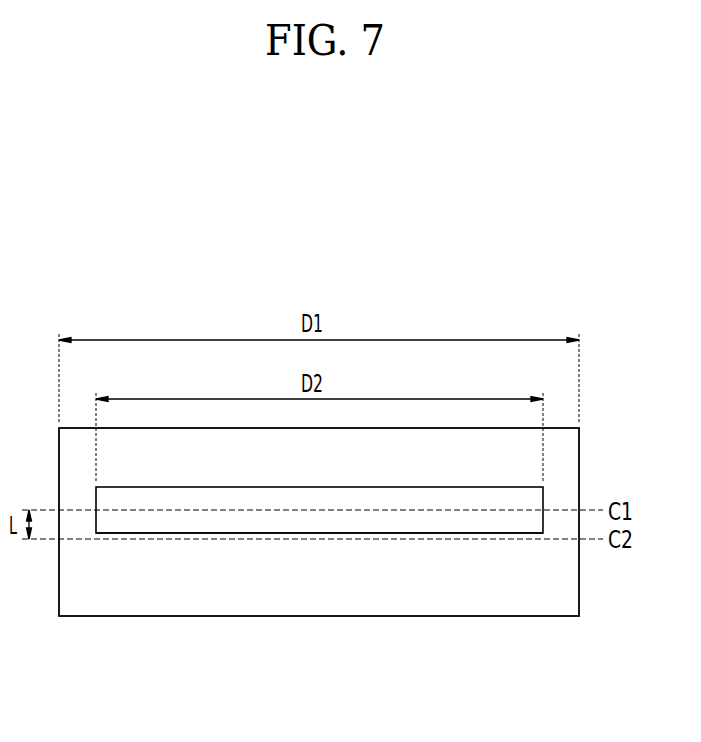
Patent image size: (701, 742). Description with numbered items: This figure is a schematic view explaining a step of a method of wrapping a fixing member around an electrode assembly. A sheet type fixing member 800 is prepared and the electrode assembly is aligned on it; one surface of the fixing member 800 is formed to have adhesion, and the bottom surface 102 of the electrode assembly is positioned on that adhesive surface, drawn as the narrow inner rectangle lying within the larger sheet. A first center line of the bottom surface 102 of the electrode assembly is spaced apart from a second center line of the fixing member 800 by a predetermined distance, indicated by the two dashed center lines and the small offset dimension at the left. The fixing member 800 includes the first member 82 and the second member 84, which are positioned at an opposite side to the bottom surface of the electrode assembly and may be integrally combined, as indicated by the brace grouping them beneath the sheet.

The bottom surface 102 is at (271, 534).
The second member 84 is at (392, 589).
The first member 82 is at (475, 463).
The fixing member 800 is at (319, 569).